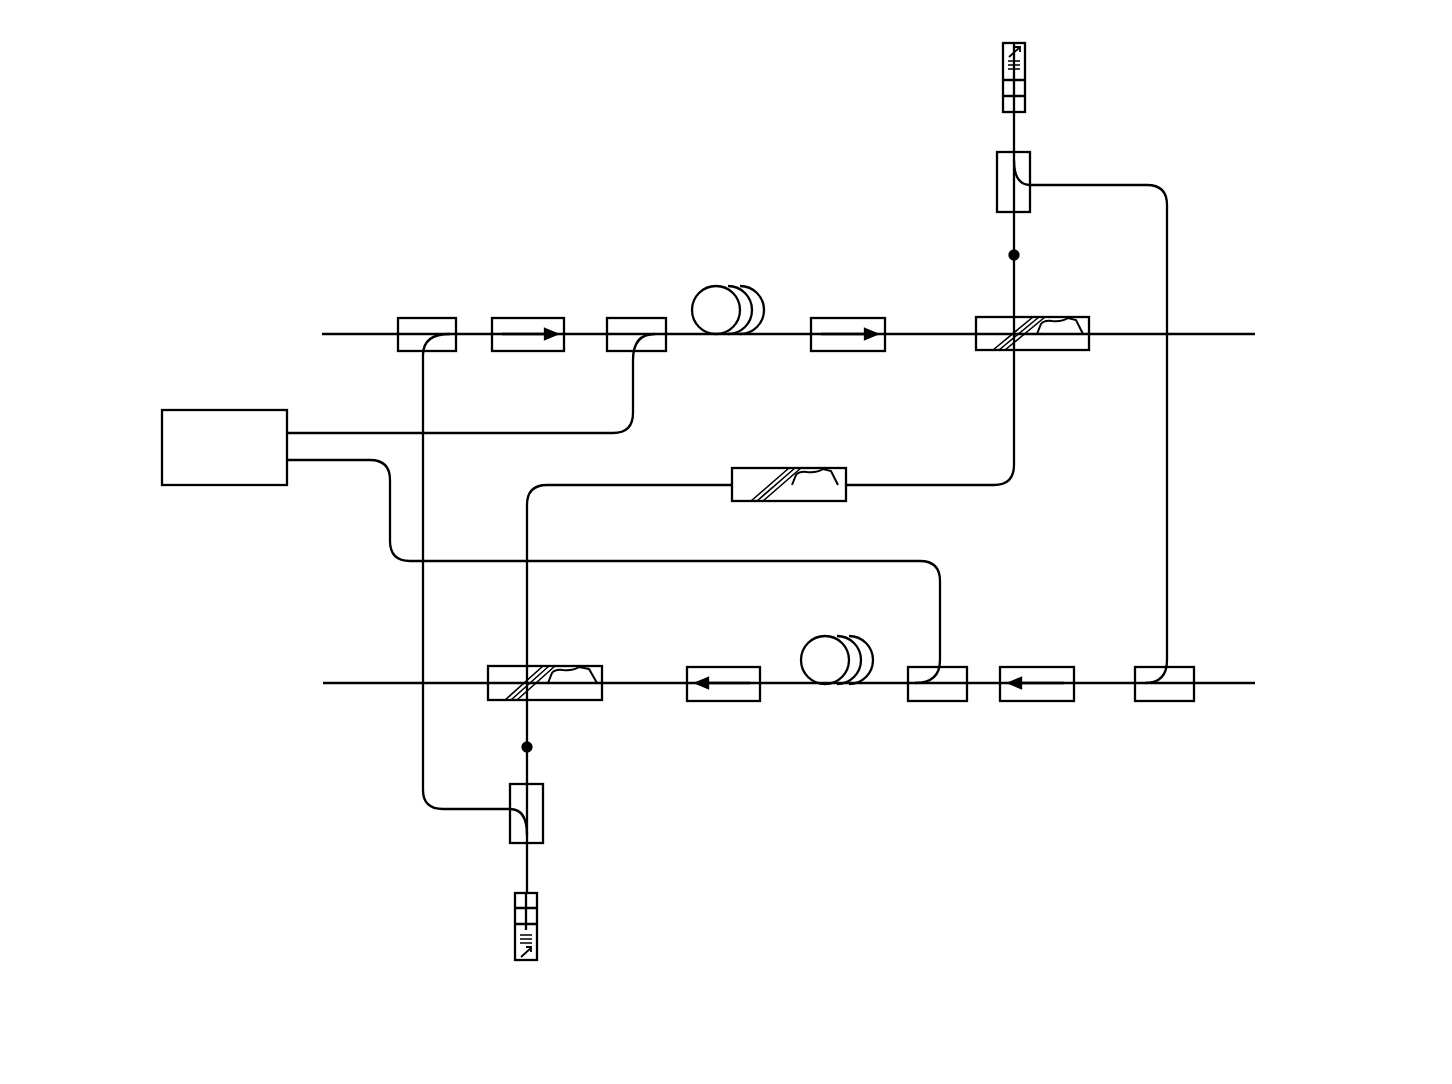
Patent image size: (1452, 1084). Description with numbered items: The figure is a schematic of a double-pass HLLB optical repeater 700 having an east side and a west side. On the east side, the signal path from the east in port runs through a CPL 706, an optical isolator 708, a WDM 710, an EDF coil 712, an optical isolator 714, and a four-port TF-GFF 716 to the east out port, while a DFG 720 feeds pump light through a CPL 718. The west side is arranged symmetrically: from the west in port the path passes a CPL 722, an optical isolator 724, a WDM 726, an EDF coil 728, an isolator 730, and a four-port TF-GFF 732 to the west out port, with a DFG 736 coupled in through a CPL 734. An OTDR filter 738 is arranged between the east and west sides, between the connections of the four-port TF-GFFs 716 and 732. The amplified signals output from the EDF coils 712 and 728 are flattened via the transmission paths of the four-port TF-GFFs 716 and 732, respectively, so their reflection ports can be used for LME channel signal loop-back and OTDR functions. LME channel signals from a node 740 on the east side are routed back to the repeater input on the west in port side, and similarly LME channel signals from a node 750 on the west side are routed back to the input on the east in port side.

The double-pass HLLB optical repeater 700 is at (773, 870).
The CPL 706 is at (427, 309).
The optical isolator 708 is at (528, 364).
The WDM 710 is at (636, 309).
The EDF coil 712 is at (726, 286).
The optical isolator 714 is at (848, 357).
The 4-port TF-GFF 716 is at (1051, 311).
The CPL 718 is at (988, 182).
The DFG 720 is at (1057, 77).
The CPL 722 is at (1164, 714).
The optical isolator 724 is at (1037, 713).
The WDM 726 is at (937, 713).
The EDF coil 728 is at (840, 635).
The isolator 730 is at (724, 713).
The 4-port TF-GFF 732 is at (567, 705).
The CPL 734 is at (553, 813).
The DFG 736 is at (499, 926).
The OTDR filter 738 is at (792, 497).
The node 740 is at (989, 254).
The node 750 is at (503, 747).